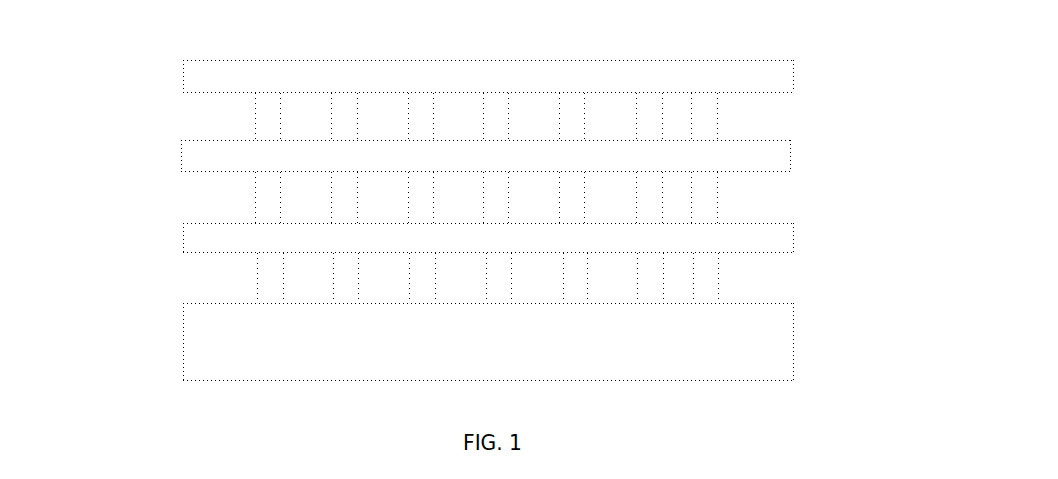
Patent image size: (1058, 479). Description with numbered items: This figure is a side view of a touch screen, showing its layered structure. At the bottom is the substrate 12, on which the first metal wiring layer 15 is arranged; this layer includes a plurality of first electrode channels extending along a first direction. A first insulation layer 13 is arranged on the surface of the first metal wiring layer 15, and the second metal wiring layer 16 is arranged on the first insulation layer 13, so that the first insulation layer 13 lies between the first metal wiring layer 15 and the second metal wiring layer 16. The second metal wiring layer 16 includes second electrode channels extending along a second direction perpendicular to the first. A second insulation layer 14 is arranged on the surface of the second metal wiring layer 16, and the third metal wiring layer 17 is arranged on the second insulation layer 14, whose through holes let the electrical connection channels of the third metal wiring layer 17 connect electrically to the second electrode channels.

The substrate 12 is at (750, 342).
The first insulation layer 13 is at (790, 239).
The second insulation layer 14 is at (790, 159).
The first metal wiring layer 15 is at (256, 283).
The second metal wiring layer 16 is at (250, 200).
The third metal wiring layer 17 is at (240, 116).